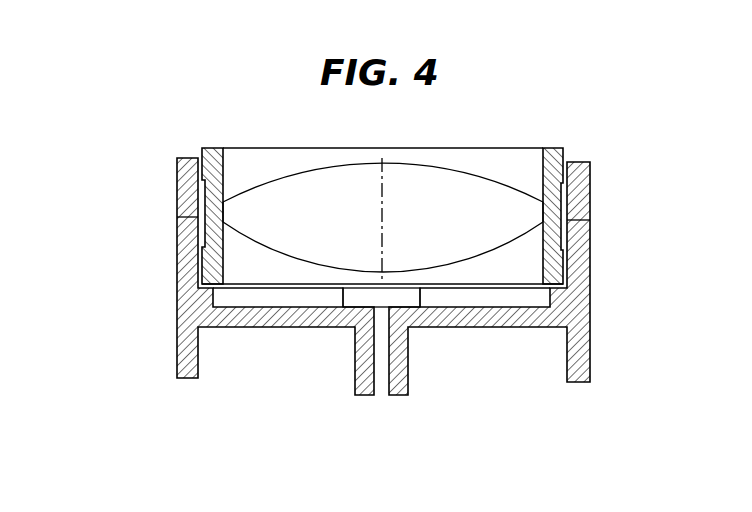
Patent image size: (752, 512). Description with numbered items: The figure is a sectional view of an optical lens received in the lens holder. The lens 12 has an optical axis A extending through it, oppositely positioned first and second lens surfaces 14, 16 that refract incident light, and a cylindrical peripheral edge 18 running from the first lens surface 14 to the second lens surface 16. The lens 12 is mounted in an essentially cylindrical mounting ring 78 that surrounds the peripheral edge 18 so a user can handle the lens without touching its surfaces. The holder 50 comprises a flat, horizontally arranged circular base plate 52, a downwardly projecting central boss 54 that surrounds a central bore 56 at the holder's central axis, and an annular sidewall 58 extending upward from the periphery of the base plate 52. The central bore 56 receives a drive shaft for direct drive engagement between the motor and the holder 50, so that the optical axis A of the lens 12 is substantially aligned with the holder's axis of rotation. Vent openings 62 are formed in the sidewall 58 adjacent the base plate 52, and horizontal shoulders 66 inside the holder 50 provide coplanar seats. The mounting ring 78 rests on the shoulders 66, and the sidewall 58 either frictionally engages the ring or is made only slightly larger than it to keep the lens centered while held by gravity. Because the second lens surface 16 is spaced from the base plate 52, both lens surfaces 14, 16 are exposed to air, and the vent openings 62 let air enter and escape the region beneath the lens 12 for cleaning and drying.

The lens 12 is at (383, 250).
The first lens surface 14 is at (307, 174).
The second lens surface 16 is at (472, 256).
The peripheral edge 18 is at (543, 207).
The holder 50 is at (347, 274).
The base plate 52 is at (382, 274).
The central boss 54 is at (354, 376).
The central bore 56 is at (383, 397).
The sidewall 58 is at (382, 274).
The vent openings 62 is at (278, 296).
The shoulder 66 is at (382, 274).
The mounting ring 78 is at (176, 180).
The optical axis A is at (380, 200).